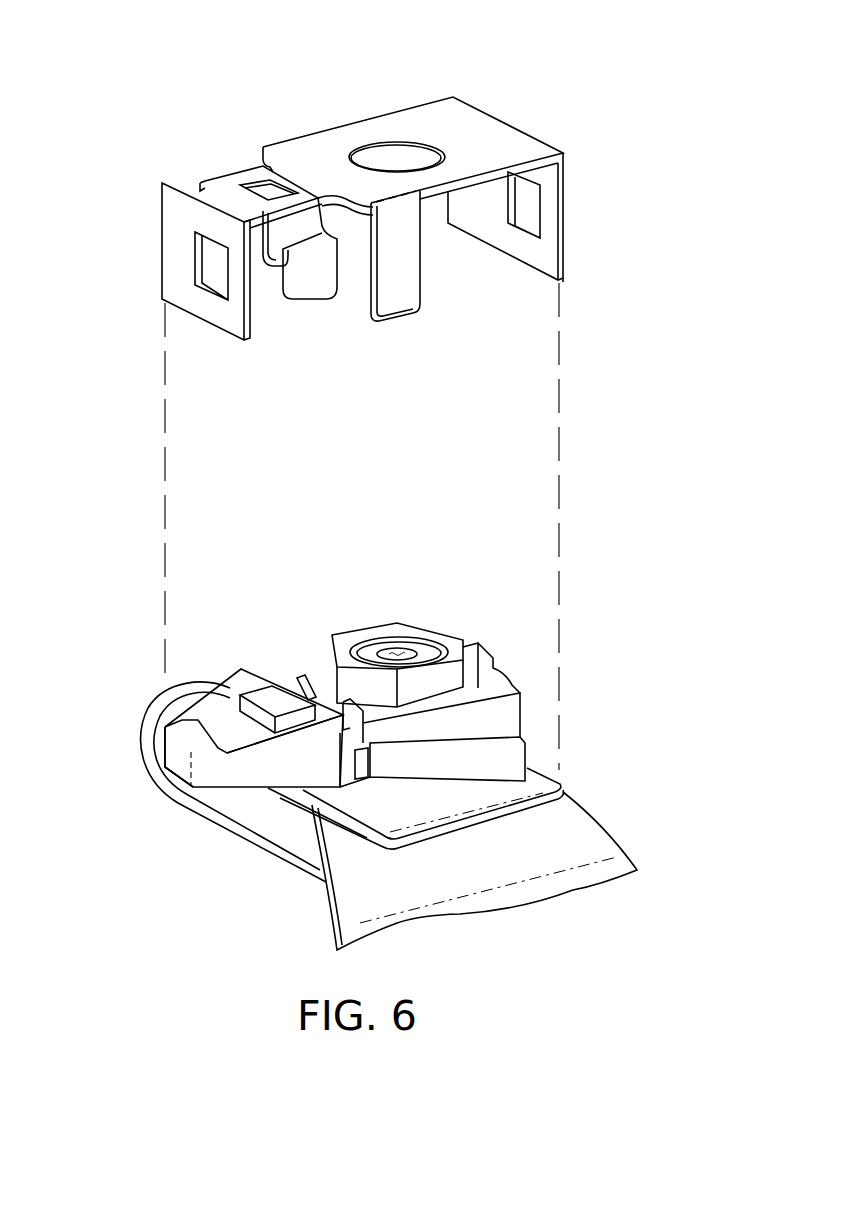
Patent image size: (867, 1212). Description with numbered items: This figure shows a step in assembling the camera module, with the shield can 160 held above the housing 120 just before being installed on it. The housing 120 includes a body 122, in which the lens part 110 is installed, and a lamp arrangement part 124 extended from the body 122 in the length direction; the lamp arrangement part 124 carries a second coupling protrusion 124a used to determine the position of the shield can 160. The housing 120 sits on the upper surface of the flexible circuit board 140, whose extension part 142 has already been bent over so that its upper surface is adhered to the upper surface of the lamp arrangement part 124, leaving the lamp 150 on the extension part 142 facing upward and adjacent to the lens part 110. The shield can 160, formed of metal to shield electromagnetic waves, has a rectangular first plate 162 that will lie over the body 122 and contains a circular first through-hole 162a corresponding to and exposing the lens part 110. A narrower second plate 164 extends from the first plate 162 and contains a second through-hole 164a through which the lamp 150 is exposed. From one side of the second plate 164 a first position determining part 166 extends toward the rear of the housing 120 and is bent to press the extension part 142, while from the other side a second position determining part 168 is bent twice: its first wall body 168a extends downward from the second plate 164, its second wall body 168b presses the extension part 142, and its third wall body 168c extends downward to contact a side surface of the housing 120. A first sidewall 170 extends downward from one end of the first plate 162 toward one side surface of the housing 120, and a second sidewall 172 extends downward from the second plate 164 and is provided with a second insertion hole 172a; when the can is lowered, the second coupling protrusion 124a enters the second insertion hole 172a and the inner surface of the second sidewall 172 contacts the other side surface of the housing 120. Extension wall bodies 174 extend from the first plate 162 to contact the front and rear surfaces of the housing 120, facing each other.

The lens part 110 is at (452, 640).
The housing 120 is at (369, 769).
The body 122 is at (507, 717).
The lamp arrangement part 124 is at (263, 767).
The second coupling protrusion 124a is at (177, 762).
The flexible circuit board 140 is at (588, 825).
The extension part 142 is at (233, 692).
The lamp 150 is at (272, 693).
The shield can 160 is at (510, 112).
The first plate 162 is at (376, 122).
The first through-hole 162a is at (398, 160).
The second plate 164 is at (206, 186).
The second through-hole 164a is at (274, 195).
The first position determining part 166 is at (215, 198).
The second position determining part 168 is at (353, 448).
The first wall body 168a is at (277, 228).
The second wall body 168b is at (285, 242).
The third wall body 168c is at (307, 277).
The first sidewall 170 is at (561, 266).
The second sidewall 172 is at (171, 220).
The second insertion hole 172a is at (210, 261).
The extension wall bodies 174 is at (400, 310).